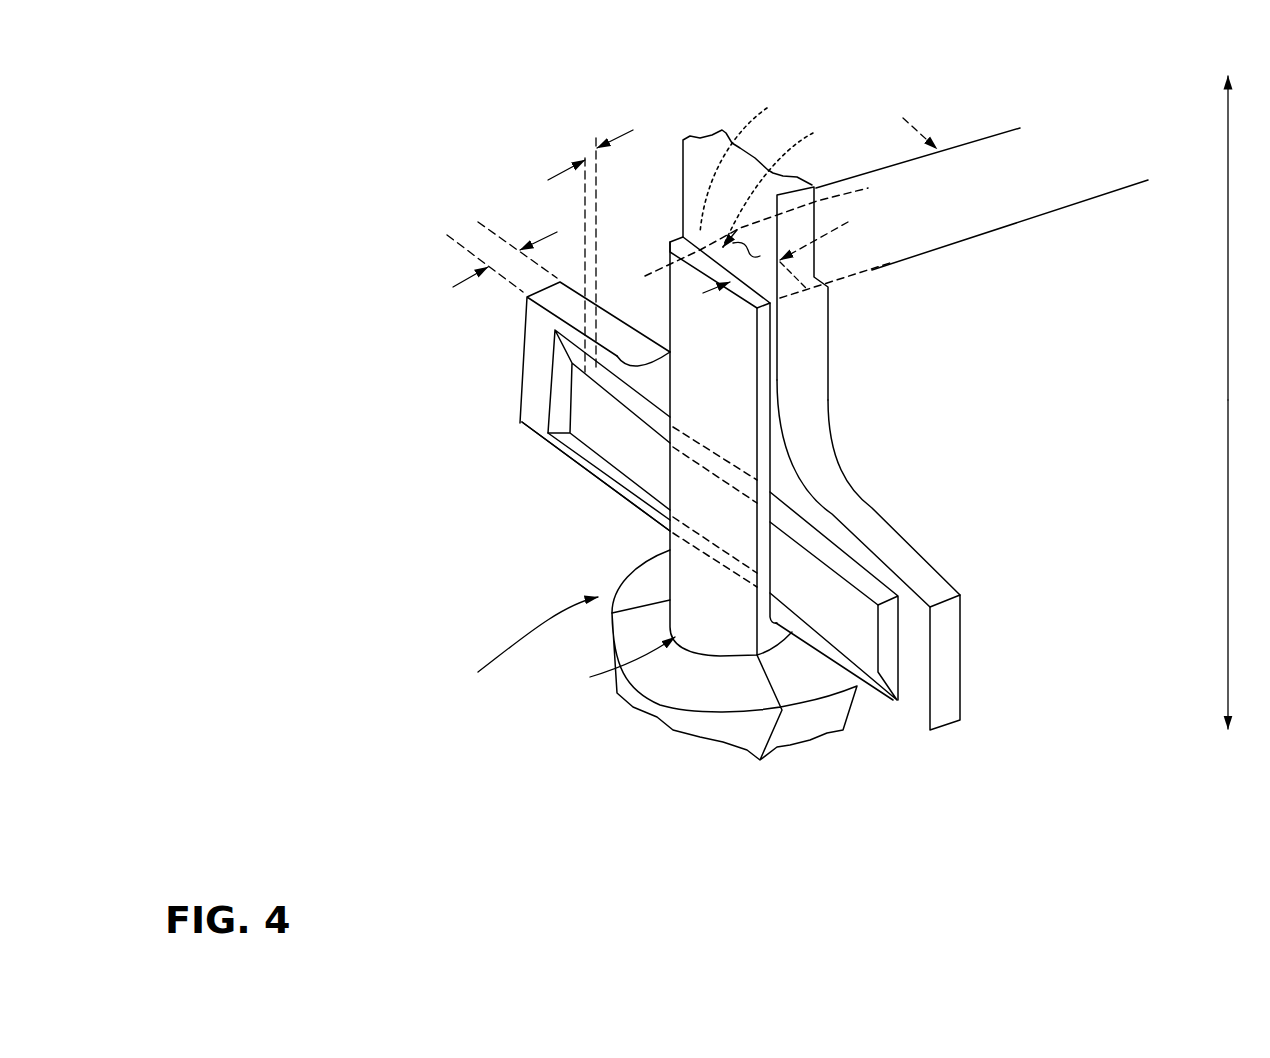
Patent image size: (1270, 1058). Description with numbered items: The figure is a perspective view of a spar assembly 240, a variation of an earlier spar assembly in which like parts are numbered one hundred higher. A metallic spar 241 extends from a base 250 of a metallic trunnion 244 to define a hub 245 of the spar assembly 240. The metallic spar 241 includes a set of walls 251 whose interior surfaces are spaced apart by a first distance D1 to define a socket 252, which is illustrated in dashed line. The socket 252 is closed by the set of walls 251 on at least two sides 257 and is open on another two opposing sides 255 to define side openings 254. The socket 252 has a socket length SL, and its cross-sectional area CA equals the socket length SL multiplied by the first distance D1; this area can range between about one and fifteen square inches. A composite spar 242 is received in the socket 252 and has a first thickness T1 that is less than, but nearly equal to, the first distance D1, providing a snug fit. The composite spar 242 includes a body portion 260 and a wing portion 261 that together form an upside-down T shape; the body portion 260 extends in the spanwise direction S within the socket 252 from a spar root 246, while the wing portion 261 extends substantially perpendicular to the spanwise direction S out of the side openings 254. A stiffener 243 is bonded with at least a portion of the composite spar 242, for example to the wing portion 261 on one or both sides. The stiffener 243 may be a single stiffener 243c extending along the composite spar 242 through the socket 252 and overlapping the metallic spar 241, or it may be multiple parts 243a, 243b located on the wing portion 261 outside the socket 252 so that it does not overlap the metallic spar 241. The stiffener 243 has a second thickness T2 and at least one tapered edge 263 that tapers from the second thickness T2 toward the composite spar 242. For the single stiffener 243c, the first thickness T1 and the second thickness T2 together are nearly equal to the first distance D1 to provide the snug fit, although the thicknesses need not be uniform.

The spar assembly 240 is at (416, 150).
The metallic spar 241 is at (734, 437).
The composite spar 242 is at (840, 466).
The stiffener 243 is at (600, 427).
The stiffener part 243a is at (558, 420).
The stiffener part 243b is at (813, 598).
The single stiffener 243c is at (703, 497).
The metallic trunnion 244 is at (557, 649).
The hub 245 is at (611, 662).
The spar root 246 is at (618, 502).
The base 250 is at (735, 693).
The set of walls 251 is at (714, 380).
The socket 252 is at (793, 189).
The side openings 254 is at (783, 415).
The opposing sides 255 is at (759, 161).
The sides 257 is at (736, 277).
The body portion 260 is at (715, 142).
The wing portion 261 is at (938, 642).
The tapered edge 263 is at (798, 532).
The cross-sectional area CA is at (832, 248).
The first distance D1 is at (702, 304).
The first thickness T1 is at (488, 263).
The second thickness T2 is at (606, 245).
The spanwise direction S is at (1216, 402).
The socket length SL is at (1022, 234).